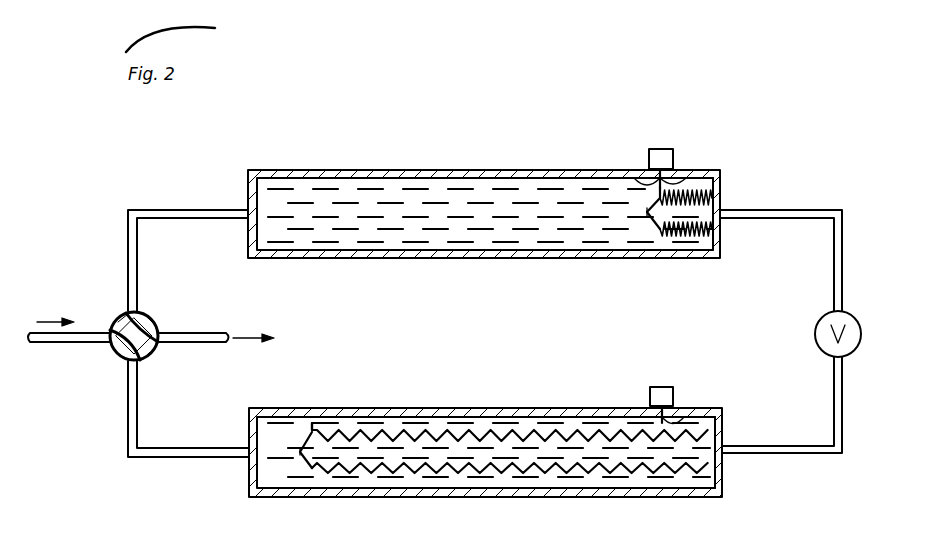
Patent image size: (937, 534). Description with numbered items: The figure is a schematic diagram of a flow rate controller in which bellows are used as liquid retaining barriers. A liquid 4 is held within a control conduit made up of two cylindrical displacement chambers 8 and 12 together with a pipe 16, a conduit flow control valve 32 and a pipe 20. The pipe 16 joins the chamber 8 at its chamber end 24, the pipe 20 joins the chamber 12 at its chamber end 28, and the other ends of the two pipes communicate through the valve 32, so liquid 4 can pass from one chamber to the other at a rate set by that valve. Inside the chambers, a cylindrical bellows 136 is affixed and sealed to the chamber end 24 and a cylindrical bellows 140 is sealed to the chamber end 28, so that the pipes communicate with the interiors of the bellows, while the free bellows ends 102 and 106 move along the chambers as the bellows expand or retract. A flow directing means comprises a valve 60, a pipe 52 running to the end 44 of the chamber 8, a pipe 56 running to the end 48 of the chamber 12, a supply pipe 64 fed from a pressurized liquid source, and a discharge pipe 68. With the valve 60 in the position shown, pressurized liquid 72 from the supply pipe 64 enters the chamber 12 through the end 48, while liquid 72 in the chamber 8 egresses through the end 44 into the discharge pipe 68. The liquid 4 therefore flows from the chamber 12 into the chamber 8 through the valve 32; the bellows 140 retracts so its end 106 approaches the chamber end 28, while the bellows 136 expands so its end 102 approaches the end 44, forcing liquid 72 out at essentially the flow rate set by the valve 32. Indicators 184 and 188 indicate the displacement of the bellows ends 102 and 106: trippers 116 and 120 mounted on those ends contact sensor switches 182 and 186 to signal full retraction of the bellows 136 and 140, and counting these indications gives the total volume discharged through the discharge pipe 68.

The displacement chamber 8 is at (326, 170).
The displacement chamber 12 is at (478, 408).
The liquid 4 is at (710, 208).
The pipe 16 is at (845, 243).
The pipe 20 is at (845, 398).
The chamber end 24 is at (722, 237).
The chamber end 28 is at (722, 470).
The valve 32 is at (862, 333).
The end of chamber 44 is at (248, 200).
The end of chamber 48 is at (249, 480).
The pipe 52 is at (128, 222).
The pipe 56 is at (128, 420).
The valve 60 is at (118, 350).
The supply pipe 64 is at (90, 330).
The discharge pipe 68 is at (200, 345).
The pressurized liquid 72 is at (405, 195).
The bellows end 102 is at (646, 214).
The bellows end 106 is at (300, 465).
The tripper 116 is at (650, 185).
The tripper 120 is at (315, 423).
The bellows 136 is at (680, 240).
The bellows 140 is at (408, 435).
The sensor switch 182 is at (683, 183).
The indicator 184 is at (665, 148).
The sensor switch 186 is at (675, 420).
The indicator 188 is at (660, 387).